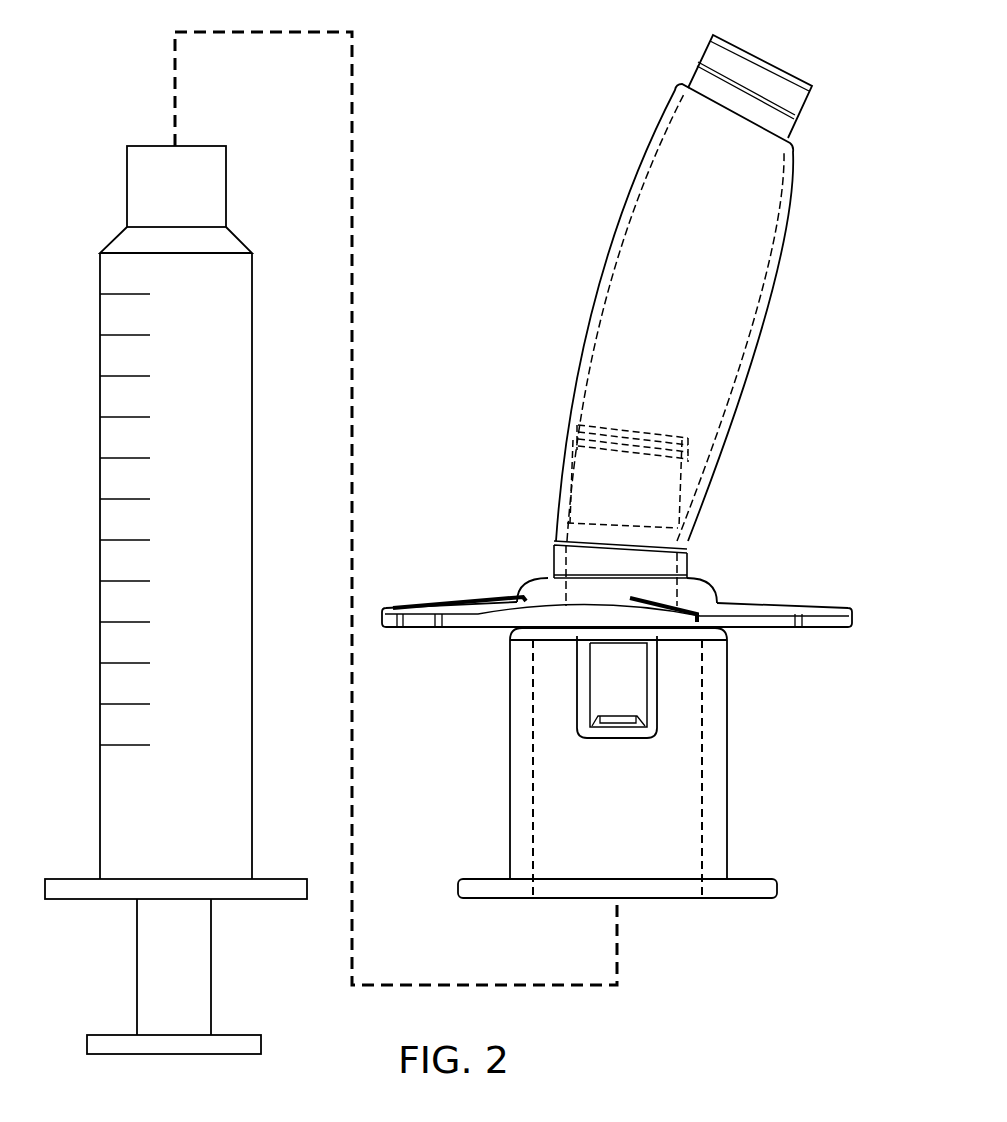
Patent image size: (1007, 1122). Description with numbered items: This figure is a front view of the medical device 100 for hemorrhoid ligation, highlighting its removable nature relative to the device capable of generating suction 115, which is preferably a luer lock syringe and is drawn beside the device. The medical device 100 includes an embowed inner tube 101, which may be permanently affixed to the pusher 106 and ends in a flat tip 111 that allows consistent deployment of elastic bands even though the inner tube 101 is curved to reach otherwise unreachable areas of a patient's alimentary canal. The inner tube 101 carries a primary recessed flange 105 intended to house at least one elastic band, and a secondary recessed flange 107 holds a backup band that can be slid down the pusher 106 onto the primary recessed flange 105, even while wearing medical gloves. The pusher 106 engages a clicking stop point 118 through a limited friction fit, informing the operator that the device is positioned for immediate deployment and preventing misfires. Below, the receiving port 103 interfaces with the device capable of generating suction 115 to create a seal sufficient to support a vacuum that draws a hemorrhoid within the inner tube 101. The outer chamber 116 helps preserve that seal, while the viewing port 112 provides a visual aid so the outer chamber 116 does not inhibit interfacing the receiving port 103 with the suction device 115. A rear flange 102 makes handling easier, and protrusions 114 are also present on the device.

The medical device 100 is at (498, 268).
The inner tube 101 is at (792, 128).
The rear flange 102 is at (746, 899).
The receiving port 103 is at (648, 689).
The primary recessed flange 105 is at (698, 63).
The pusher 106 is at (760, 218).
The secondary recessed flange 107 is at (688, 553).
The flat tip 111 is at (762, 59).
The viewing port 112 is at (577, 703).
The protrusions 114 is at (841, 609).
The device capable of generating suction 115 is at (100, 434).
The outer chamber 116 is at (727, 783).
The clicking stop point 118 is at (703, 459).